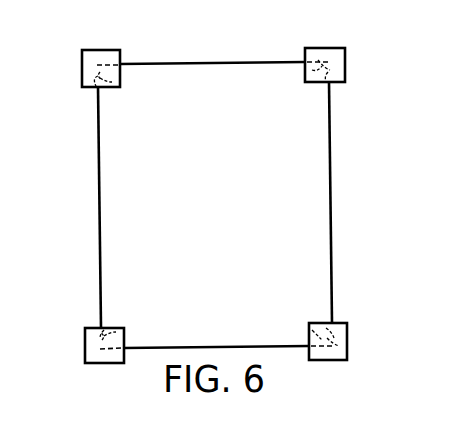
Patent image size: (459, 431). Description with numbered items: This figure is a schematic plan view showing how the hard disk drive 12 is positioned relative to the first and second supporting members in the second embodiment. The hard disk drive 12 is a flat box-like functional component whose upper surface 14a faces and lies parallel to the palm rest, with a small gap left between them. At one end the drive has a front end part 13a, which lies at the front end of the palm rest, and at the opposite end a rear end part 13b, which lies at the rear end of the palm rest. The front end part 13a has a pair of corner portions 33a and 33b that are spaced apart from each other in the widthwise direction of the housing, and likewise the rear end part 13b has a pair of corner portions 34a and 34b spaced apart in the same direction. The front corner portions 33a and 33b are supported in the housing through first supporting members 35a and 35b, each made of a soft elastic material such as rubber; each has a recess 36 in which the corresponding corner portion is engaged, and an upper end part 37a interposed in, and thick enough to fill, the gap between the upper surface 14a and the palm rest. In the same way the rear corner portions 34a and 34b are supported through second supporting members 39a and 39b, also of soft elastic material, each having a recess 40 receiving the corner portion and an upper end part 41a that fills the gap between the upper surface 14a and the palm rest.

The hard disk drive 12 is at (211, 62).
The front end part 13a is at (107, 200).
The rear end part 13b is at (322, 192).
The upper surface 14a is at (216, 206).
The corner portion 33a is at (122, 80).
The corner portion 33b is at (118, 330).
The corner portion 34a is at (305, 84).
The corner portion 34b is at (312, 328).
The first supporting member 35a is at (101, 50).
The first supporting member 35b is at (105, 365).
The recess 36 is at (94, 92).
The upper end part 37a is at (100, 72).
The second supporting member 39a is at (324, 48).
The second supporting member 39b is at (330, 362).
The recess 40 is at (330, 88).
The upper end part 41a is at (330, 58).